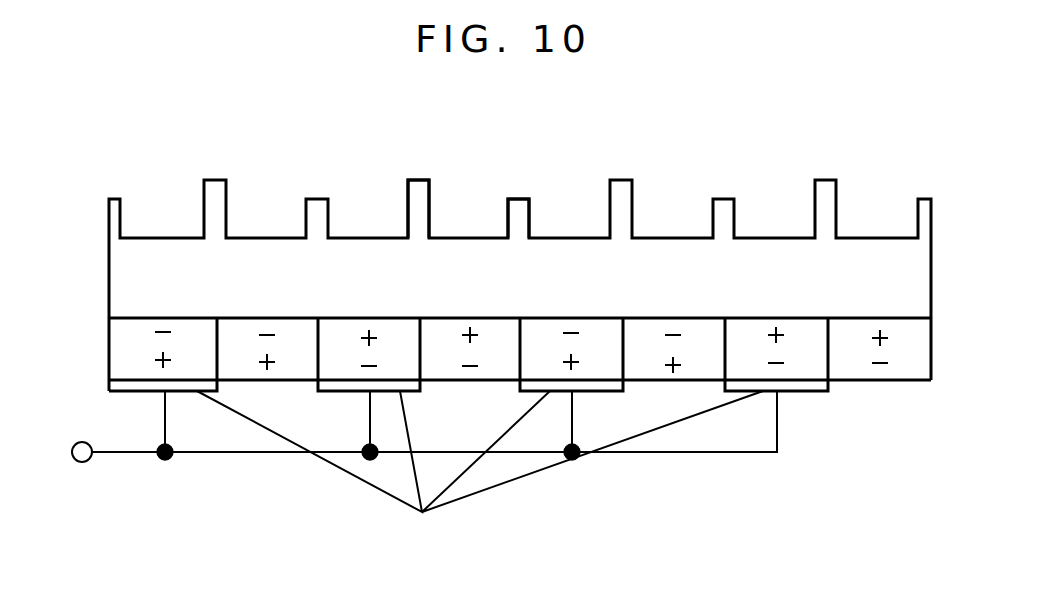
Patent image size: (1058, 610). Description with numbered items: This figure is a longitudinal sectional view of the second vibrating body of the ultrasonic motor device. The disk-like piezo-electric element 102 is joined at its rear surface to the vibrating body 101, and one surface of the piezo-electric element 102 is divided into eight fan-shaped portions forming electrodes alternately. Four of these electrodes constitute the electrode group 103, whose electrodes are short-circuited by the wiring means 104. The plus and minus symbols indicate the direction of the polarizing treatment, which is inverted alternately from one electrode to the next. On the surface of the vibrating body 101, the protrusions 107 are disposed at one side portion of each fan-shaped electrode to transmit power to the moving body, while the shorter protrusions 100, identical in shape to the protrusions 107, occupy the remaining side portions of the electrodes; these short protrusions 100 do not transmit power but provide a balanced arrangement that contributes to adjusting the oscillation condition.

The short protrusion 100 is at (520, 199).
The vibrating body 101 is at (663, 260).
The piezo-electric element 102 is at (878, 375).
The electrode group 103 is at (480, 472).
The wiring means 104 is at (123, 453).
The protrusion 107 is at (422, 180).